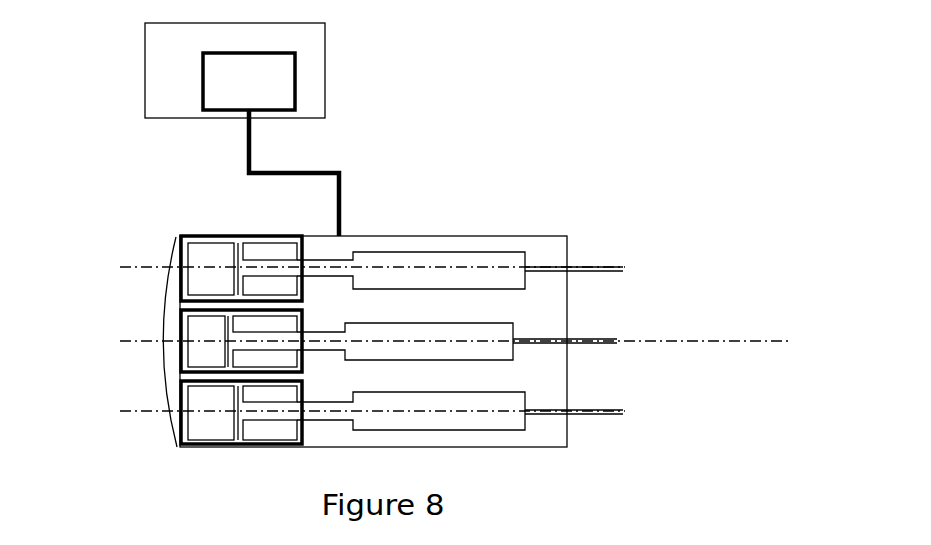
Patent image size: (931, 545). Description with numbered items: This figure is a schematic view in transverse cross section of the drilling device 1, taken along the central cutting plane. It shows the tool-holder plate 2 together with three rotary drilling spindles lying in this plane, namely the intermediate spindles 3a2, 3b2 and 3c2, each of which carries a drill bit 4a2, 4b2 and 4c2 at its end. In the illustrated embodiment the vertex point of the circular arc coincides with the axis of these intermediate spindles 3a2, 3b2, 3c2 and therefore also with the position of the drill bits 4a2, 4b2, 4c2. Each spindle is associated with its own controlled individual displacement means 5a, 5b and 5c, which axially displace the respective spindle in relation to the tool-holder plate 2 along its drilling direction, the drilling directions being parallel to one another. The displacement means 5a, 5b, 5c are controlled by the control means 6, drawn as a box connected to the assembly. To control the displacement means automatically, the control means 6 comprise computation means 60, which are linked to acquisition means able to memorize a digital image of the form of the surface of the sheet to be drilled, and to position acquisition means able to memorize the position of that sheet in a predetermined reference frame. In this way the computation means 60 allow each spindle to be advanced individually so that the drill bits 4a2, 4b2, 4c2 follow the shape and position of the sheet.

The drilling device 1 is at (369, 197).
The tool-holder plate 2 is at (499, 240).
The intermediate spindle 3a2 is at (486, 287).
The intermediate spindle 3b2 is at (460, 324).
The intermediate spindle 3c2 is at (411, 399).
The drill bit 4a2 is at (592, 267).
The drill bit 4b2 is at (592, 340).
The drill bit 4c2 is at (592, 410).
The controlled individual displacement means 5a is at (213, 236).
The controlled individual displacement means 5b is at (178, 318).
The controlled individual displacement means 5c is at (180, 442).
The control means 6 is at (145, 42).
The computation means 60 is at (249, 81).